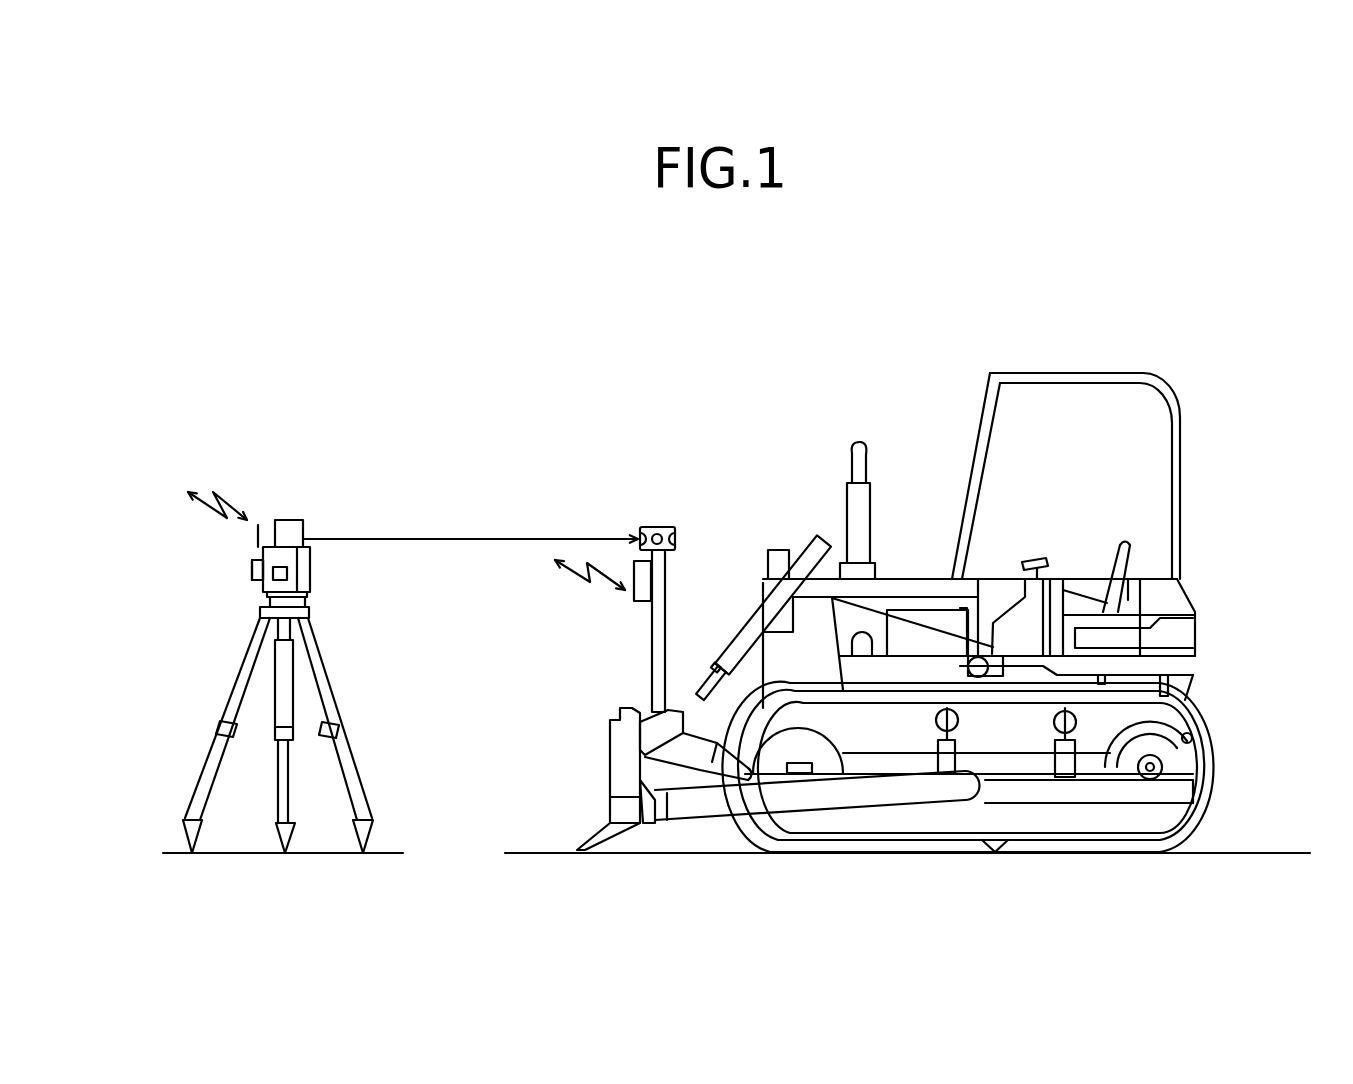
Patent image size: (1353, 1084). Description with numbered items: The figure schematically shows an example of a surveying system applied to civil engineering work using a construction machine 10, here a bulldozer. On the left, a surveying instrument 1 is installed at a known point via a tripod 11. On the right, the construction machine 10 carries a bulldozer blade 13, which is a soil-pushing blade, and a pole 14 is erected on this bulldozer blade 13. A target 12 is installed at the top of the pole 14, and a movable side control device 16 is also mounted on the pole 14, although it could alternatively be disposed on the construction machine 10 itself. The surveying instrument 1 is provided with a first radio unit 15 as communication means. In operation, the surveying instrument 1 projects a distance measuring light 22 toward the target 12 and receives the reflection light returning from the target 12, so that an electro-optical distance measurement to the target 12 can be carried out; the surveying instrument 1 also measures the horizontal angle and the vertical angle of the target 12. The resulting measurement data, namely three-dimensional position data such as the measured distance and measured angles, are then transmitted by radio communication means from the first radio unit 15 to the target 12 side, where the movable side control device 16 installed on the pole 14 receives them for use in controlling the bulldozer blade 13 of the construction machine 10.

The surveying instrument 1 is at (292, 520).
The construction machine 10 is at (1190, 590).
The tripod 11 is at (235, 700).
The target 12 is at (653, 527).
The bulldozer blade 13 is at (608, 762).
The pole 14 is at (652, 633).
The first radio unit 15 is at (252, 562).
The movable side control device 16 is at (633, 598).
The distance measuring light 22 is at (427, 538).